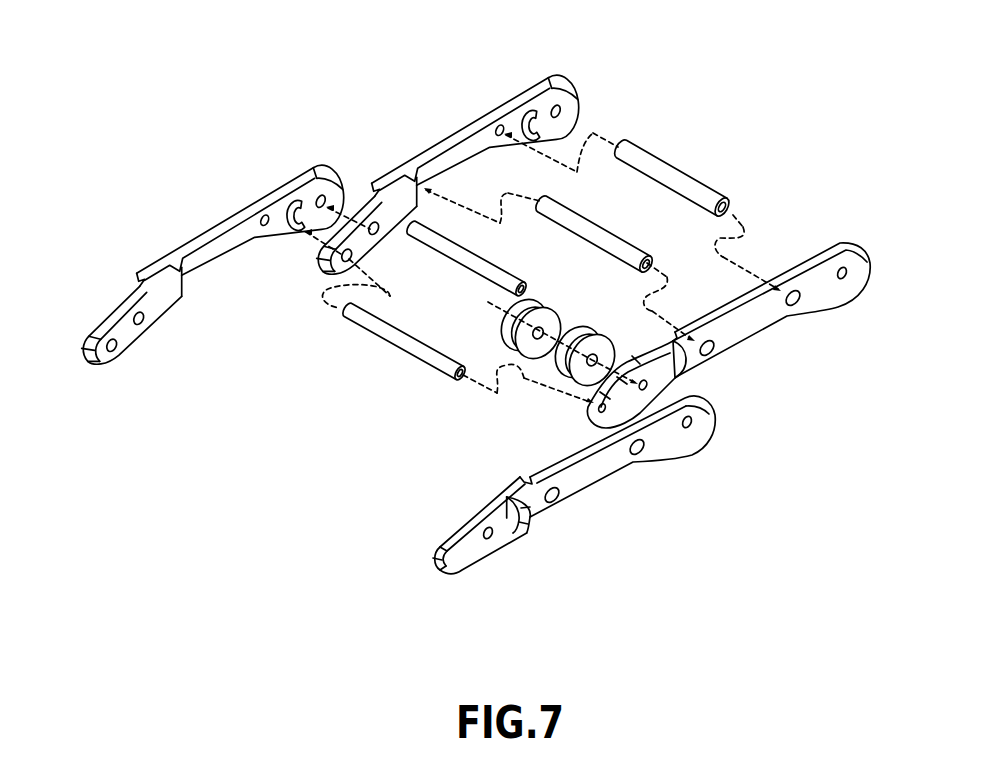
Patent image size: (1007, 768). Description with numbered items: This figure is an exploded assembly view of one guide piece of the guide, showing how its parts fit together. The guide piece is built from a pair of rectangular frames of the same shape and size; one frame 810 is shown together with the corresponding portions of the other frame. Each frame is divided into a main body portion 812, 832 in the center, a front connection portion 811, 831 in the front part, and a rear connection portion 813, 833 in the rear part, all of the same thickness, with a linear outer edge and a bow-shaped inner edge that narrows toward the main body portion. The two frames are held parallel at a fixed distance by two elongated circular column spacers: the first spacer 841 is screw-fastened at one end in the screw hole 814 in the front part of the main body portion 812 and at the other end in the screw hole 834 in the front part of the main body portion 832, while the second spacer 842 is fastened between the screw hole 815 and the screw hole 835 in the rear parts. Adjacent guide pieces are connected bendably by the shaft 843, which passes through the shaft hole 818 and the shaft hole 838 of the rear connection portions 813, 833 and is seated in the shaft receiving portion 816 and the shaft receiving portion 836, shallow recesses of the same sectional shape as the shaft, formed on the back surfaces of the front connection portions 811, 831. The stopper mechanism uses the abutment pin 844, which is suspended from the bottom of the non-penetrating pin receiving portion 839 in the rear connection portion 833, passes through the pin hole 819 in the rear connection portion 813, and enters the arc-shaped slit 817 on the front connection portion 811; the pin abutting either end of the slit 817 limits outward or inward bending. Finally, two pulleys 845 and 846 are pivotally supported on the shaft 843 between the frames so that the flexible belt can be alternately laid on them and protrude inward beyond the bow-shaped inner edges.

The frame 810 is at (592, 239).
The front connection portion 811 is at (199, 253).
The main body portion 812 is at (220, 229).
The rear connection portion 813 is at (118, 307).
The screw hole 814 is at (483, 97).
The screw hole 815 is at (465, 139).
The shaft receiving portion 816 is at (587, 95).
The slit 817 is at (510, 80).
The shaft hole 818 is at (360, 182).
The pin hole 819 is at (342, 249).
The front connection portion 831 is at (576, 498).
The main body portion 832 is at (652, 475).
The rear connection portion 833 is at (542, 539).
The screw hole 834 is at (797, 302).
The screw hole 835 is at (722, 350).
The shaft receiving portion 836 is at (846, 277).
The shaft hole 838 is at (688, 378).
The pin receiving portion 839 is at (593, 405).
The first spacer 841 is at (650, 178).
The second spacer 842 is at (562, 223).
The shaft 843 is at (467, 266).
The abutment pin 844 is at (385, 340).
The pulley 845 is at (584, 324).
The pulley 846 is at (557, 303).